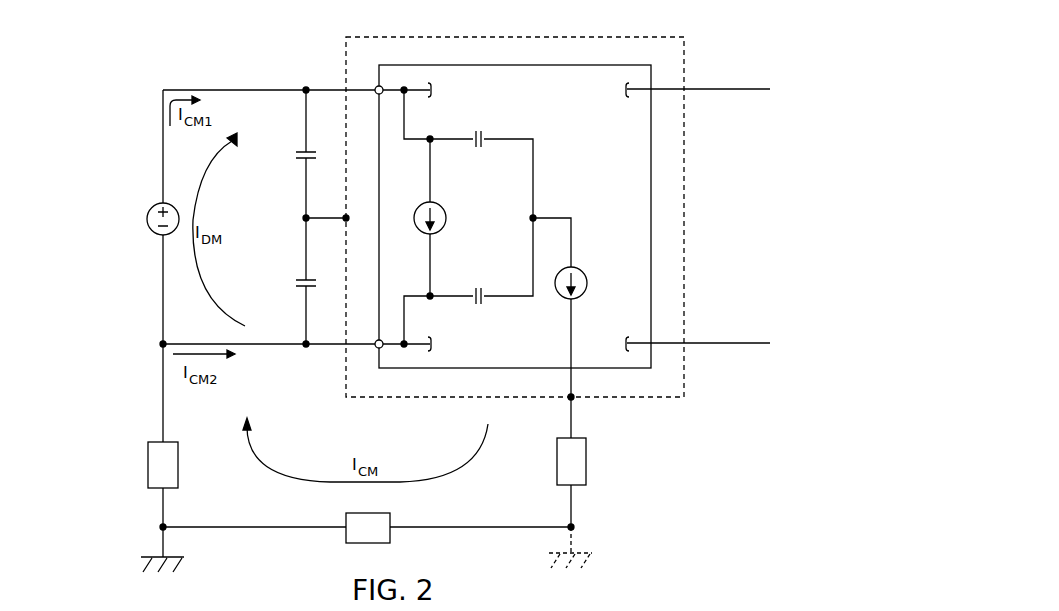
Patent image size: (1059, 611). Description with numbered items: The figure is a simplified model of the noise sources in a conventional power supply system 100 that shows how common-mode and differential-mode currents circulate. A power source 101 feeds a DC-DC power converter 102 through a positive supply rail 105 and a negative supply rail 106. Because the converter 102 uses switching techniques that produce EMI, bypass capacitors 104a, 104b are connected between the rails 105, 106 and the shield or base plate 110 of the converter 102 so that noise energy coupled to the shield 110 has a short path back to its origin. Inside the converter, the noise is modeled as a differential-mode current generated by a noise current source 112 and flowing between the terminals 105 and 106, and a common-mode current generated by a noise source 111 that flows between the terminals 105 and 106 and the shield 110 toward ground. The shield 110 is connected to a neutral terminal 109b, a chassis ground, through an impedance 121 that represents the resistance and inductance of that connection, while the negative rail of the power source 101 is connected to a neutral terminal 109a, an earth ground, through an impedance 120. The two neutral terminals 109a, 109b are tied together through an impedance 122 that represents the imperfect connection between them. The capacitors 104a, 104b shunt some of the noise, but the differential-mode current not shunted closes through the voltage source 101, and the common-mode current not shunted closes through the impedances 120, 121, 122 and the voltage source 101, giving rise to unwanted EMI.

The power supply system 100 is at (167, 35).
The power source 101 is at (147, 221).
The DC-DC power converter 102 is at (424, 65).
The EMI shunt capacitor 104a is at (294, 156).
The EMI shunt capacitor 104b is at (294, 285).
The positive supply rail 105 is at (326, 88).
The negative supply rail 106 is at (333, 346).
The neutral terminal 109a is at (158, 556).
The neutral terminal 109b is at (578, 542).
The shield 110 is at (632, 400).
The common-mode noise source 111 is at (587, 284).
The differential-mode noise current source 112 is at (447, 225).
The impedance 120 is at (158, 442).
The impedance 121 is at (587, 470).
The impedance 122 is at (368, 513).